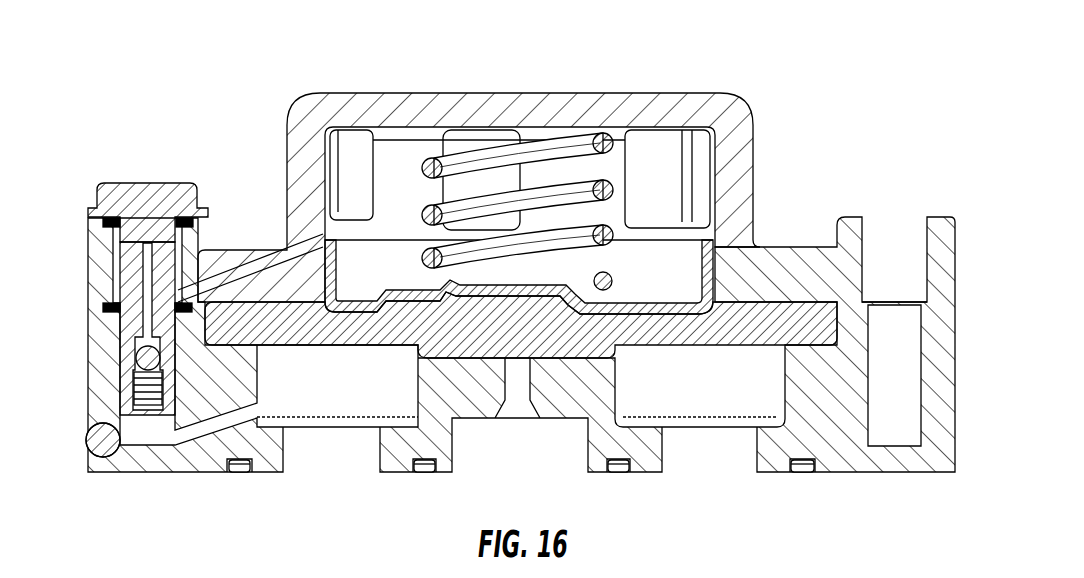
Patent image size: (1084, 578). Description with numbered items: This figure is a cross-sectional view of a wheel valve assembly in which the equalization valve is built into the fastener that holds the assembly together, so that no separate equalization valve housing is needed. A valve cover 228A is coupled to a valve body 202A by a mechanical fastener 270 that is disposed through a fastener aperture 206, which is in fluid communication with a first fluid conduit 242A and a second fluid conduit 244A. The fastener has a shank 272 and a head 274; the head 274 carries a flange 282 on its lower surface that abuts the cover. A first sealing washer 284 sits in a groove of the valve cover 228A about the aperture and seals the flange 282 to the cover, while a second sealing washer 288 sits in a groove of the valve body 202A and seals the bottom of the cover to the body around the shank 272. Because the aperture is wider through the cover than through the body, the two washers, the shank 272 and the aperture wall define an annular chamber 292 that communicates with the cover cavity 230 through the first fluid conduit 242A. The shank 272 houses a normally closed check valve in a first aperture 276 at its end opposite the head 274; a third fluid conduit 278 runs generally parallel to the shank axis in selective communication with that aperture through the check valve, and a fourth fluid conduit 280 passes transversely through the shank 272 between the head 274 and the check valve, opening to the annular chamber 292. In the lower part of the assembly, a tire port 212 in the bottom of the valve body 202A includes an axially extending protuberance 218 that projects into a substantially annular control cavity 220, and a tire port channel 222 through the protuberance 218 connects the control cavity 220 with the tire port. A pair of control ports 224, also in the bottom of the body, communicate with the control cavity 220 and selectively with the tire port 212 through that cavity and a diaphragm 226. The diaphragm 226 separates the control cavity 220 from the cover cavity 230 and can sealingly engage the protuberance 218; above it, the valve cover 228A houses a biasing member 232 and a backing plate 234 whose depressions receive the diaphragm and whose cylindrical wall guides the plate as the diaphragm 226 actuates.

The valve body 202A is at (855, 465).
The fastener aperture 206 is at (118, 363).
The tire port 212 is at (487, 463).
The protuberance 218 is at (445, 378).
The control cavity 220 is at (767, 408).
The tire port channel 222 is at (521, 392).
The control ports 224 is at (343, 460).
The diaphragm 226 is at (833, 325).
The valve cover 228A is at (737, 110).
The cover cavity 230 is at (397, 150).
The biasing member 232 is at (568, 150).
The backing plate 234 is at (708, 272).
The first fluid conduit 242A is at (282, 268).
The second fluid conduit 244A is at (205, 428).
The mechanical fastener 270 is at (133, 213).
The shank 272 is at (128, 286).
The head 274 is at (135, 200).
The first aperture 276 is at (140, 415).
The third fluid conduit 278 is at (147, 331).
The fourth fluid conduit 280 is at (133, 245).
The flange 282 is at (203, 210).
The first sealing washer 284 is at (108, 219).
The second sealing washer 288 is at (105, 306).
The annular chamber 292 is at (207, 247).